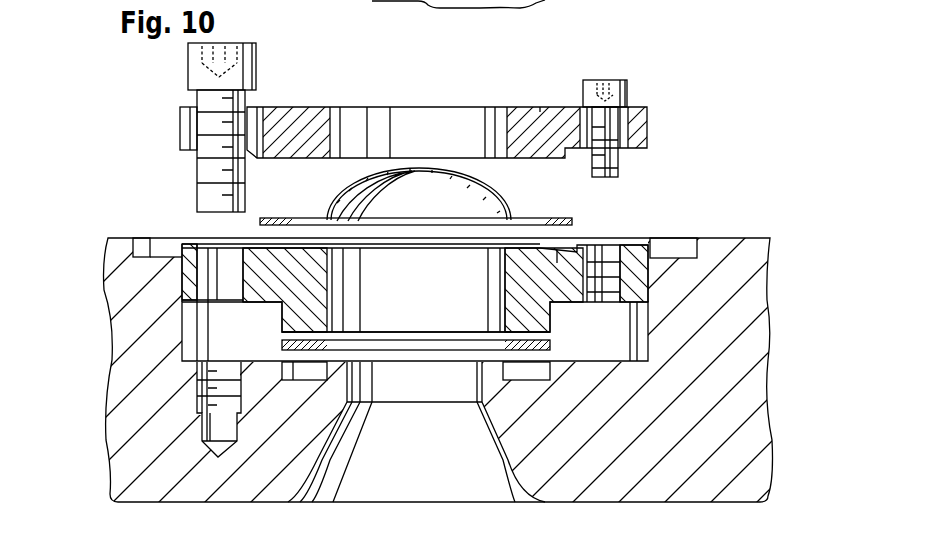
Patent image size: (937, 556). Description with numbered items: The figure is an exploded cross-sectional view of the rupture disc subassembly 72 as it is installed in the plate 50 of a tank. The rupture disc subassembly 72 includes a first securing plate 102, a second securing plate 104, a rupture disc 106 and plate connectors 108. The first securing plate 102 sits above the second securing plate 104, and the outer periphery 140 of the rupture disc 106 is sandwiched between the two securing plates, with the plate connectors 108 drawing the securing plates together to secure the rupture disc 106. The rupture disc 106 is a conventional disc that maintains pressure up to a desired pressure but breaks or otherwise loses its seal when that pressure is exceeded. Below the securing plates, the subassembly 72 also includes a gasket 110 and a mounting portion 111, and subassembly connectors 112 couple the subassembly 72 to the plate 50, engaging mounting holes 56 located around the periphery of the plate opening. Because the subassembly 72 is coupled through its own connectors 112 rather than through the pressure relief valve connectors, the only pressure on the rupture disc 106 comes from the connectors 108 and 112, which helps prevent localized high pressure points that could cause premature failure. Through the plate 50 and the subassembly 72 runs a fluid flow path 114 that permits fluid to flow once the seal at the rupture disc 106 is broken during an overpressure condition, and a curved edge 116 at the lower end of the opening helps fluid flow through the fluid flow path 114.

The plate 50 is at (720, 285).
The mounting holes 56 is at (205, 393).
The rupture disc subassembly 72 is at (178, 90).
The first securing plate 102 is at (540, 112).
The second securing plate 104 is at (557, 250).
The rupture disc 106 is at (470, 183).
The plate connectors 108 is at (628, 92).
The gasket 110 is at (550, 343).
The mounting portion 111 is at (297, 320).
The subassembly connectors 112 is at (195, 80).
The fluid flow path 114 is at (463, 120).
The curved edge 116 is at (517, 493).
The outer periphery 140 is at (276, 218).